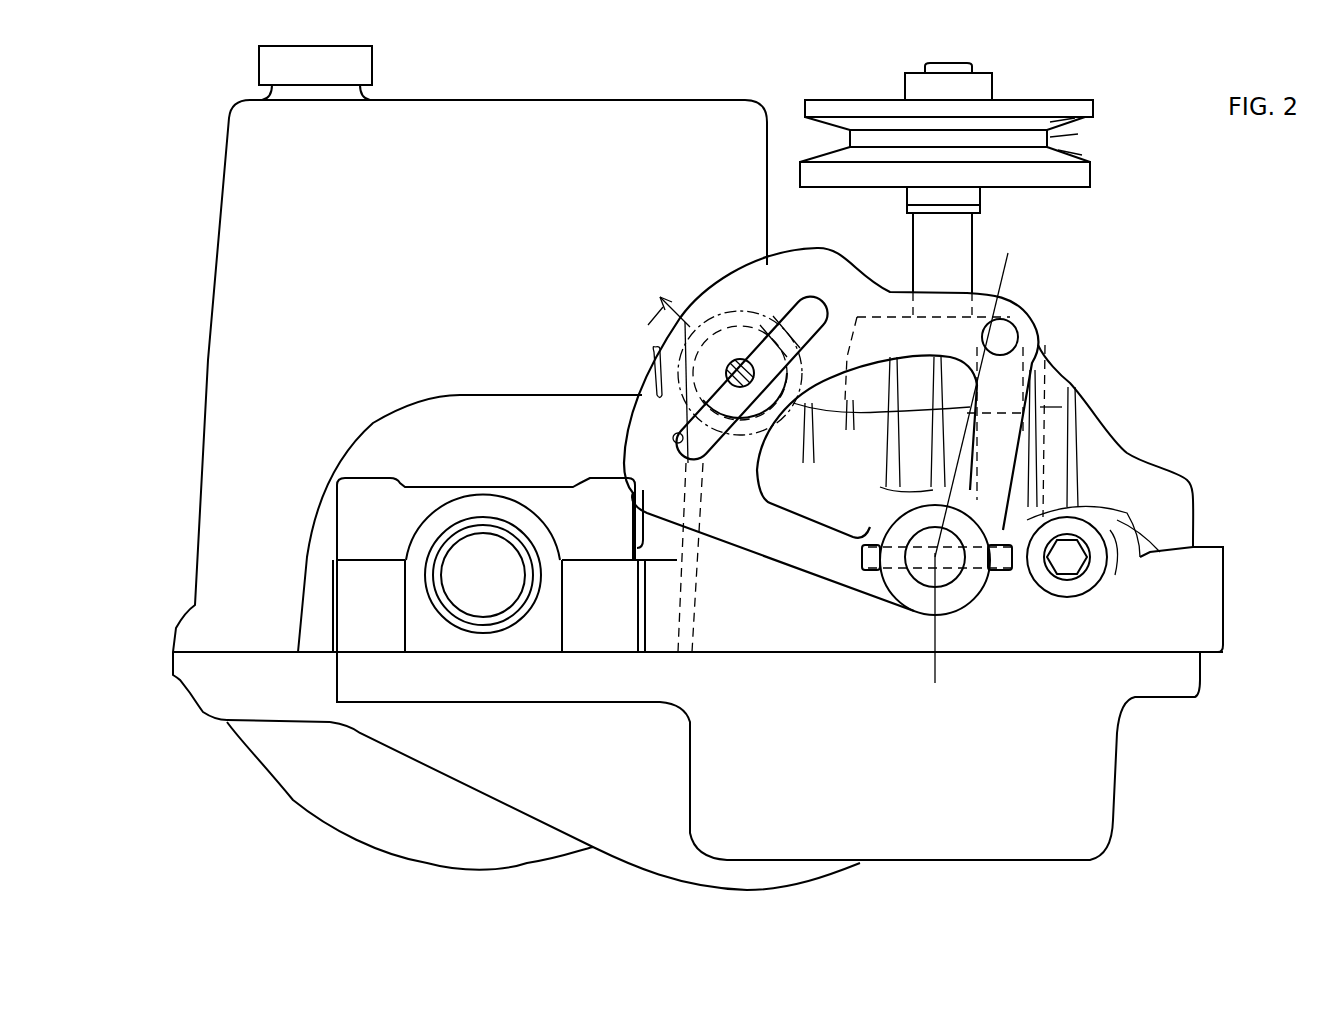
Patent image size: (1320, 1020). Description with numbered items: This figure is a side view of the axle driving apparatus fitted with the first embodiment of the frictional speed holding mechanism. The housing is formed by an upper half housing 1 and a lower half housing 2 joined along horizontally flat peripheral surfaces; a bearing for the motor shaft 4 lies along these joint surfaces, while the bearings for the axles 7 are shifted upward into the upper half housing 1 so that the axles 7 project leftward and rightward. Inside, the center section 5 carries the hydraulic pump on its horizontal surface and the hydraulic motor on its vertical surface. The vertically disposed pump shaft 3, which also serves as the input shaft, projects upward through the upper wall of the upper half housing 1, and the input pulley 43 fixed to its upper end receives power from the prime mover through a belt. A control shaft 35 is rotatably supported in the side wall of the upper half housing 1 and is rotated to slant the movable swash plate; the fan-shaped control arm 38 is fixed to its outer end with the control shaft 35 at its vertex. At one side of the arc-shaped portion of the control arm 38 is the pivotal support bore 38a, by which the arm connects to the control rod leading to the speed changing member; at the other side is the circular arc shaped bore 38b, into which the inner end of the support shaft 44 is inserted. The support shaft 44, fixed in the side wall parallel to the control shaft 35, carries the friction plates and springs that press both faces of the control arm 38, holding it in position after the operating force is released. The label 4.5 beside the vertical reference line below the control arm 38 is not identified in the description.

The upper half housing 1 is at (202, 547).
The lower half housing 2 is at (264, 764).
The pump shaft 3 is at (960, 230).
The motor shaft 4 is at (998, 270).
The center section 5 is at (655, 329).
The axles 7 is at (480, 547).
The control shaft 35 is at (920, 580).
The control arm 38 is at (763, 550).
The pivotal support bore 38a is at (1010, 322).
The circular arc shaped bore 38b is at (677, 433).
The input pulley 43 is at (1085, 172).
The support shaft 44 is at (737, 363).
The inclination angle 4.5 is at (924, 676).